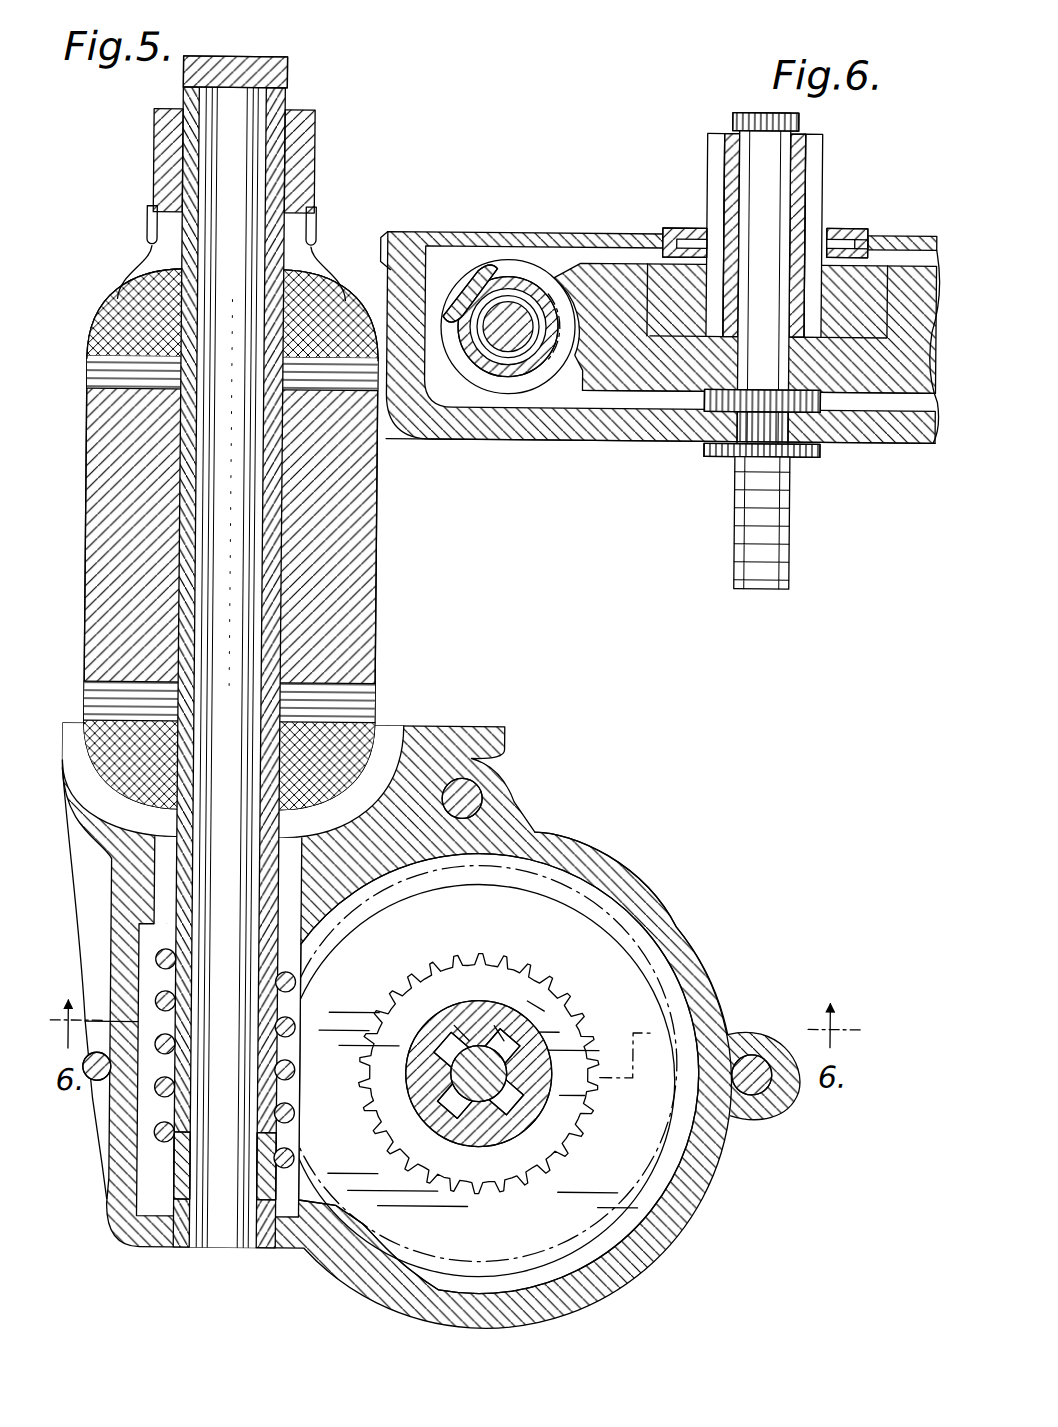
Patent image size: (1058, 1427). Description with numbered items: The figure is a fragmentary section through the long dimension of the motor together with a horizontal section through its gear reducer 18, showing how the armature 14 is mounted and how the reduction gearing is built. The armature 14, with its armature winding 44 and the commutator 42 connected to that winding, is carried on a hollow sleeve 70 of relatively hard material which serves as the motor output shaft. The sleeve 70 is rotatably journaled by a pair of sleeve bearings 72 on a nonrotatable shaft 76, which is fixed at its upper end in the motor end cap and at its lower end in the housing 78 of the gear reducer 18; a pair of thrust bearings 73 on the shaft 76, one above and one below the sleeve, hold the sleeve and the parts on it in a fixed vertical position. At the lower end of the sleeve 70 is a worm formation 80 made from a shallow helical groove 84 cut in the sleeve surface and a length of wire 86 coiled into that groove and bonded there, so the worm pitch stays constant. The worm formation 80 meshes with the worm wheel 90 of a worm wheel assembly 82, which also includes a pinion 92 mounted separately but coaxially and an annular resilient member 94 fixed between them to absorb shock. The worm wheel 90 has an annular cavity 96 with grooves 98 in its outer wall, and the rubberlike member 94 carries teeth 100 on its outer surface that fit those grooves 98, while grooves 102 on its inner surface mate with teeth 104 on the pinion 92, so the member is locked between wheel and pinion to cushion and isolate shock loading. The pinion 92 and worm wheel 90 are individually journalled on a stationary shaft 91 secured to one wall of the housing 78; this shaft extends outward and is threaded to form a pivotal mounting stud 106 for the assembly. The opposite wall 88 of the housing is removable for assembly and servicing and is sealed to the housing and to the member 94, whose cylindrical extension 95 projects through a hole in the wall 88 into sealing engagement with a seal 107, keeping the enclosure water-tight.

In FIG. 5, the armature 14 is at (375, 583).
In FIG. 5, the gear reducer 18 is at (612, 844).
In FIG. 6, the gear reducer 18 is at (672, 450).
In FIG. 5, the commutator 42 is at (310, 143).
In FIG. 5, the armature winding 44 is at (132, 300).
In FIG. 5, the hollow sleeve 70 is at (280, 507).
In FIG. 5, the sleeve bearings 72 is at (198, 218).
In FIG. 5, the thrust bearings 73 is at (282, 74).
In FIG. 5, the nonrotatable shaft 76 is at (246, 291).
In FIG. 5, the housing 78 is at (648, 891).
In FIG. 6, the housing 78 is at (536, 434).
In FIG. 5, the worm formation 80 is at (160, 1158).
In FIG. 6, the worm formation 80 is at (445, 263).
In FIG. 5, the worm wheel assembly 82 is at (312, 1215).
In FIG. 6, the worm wheel assembly 82 is at (606, 260).
In FIG. 5, the helical groove 84 is at (172, 960).
In FIG. 5, the wire 86 is at (160, 1133).
In FIG. 6, the wire 86 is at (498, 250).
In FIG. 6, the wall 88 is at (533, 240).
In FIG. 5, the worm wheel 90 is at (609, 1268).
In FIG. 6, the worm wheel 90 is at (903, 380).
In FIG. 5, the stationary shaft 91 is at (468, 1128).
In FIG. 6, the stationary shaft 91 is at (786, 146).
In FIG. 5, the pinion 92 is at (517, 1128).
In FIG. 6, the pinion 92 is at (806, 164).
In FIG. 5, the annular resilient member 94 is at (583, 1096).
In FIG. 6, the annular resilient member 94 is at (666, 337).
In FIG. 6, the cylindrical extension 95 is at (846, 231).
In FIG. 5, the annular cavity 96 is at (600, 1048).
In FIG. 6, the annular cavity 96 is at (853, 338).
In FIG. 5, the grooves 98 is at (567, 998).
In FIG. 5, the teeth 100 is at (538, 973).
In FIG. 6, the teeth 100 is at (660, 296).
In FIG. 5, the grooves 102 is at (503, 1018).
In FIG. 6, the grooves 102 is at (703, 245).
In FIG. 5, the teeth 104 is at (460, 1018).
In FIG. 6, the teeth 104 is at (706, 151).
In FIG. 6, the pivotal mounting stud 106 is at (791, 516).
In FIG. 6, the seal 107 is at (865, 234).